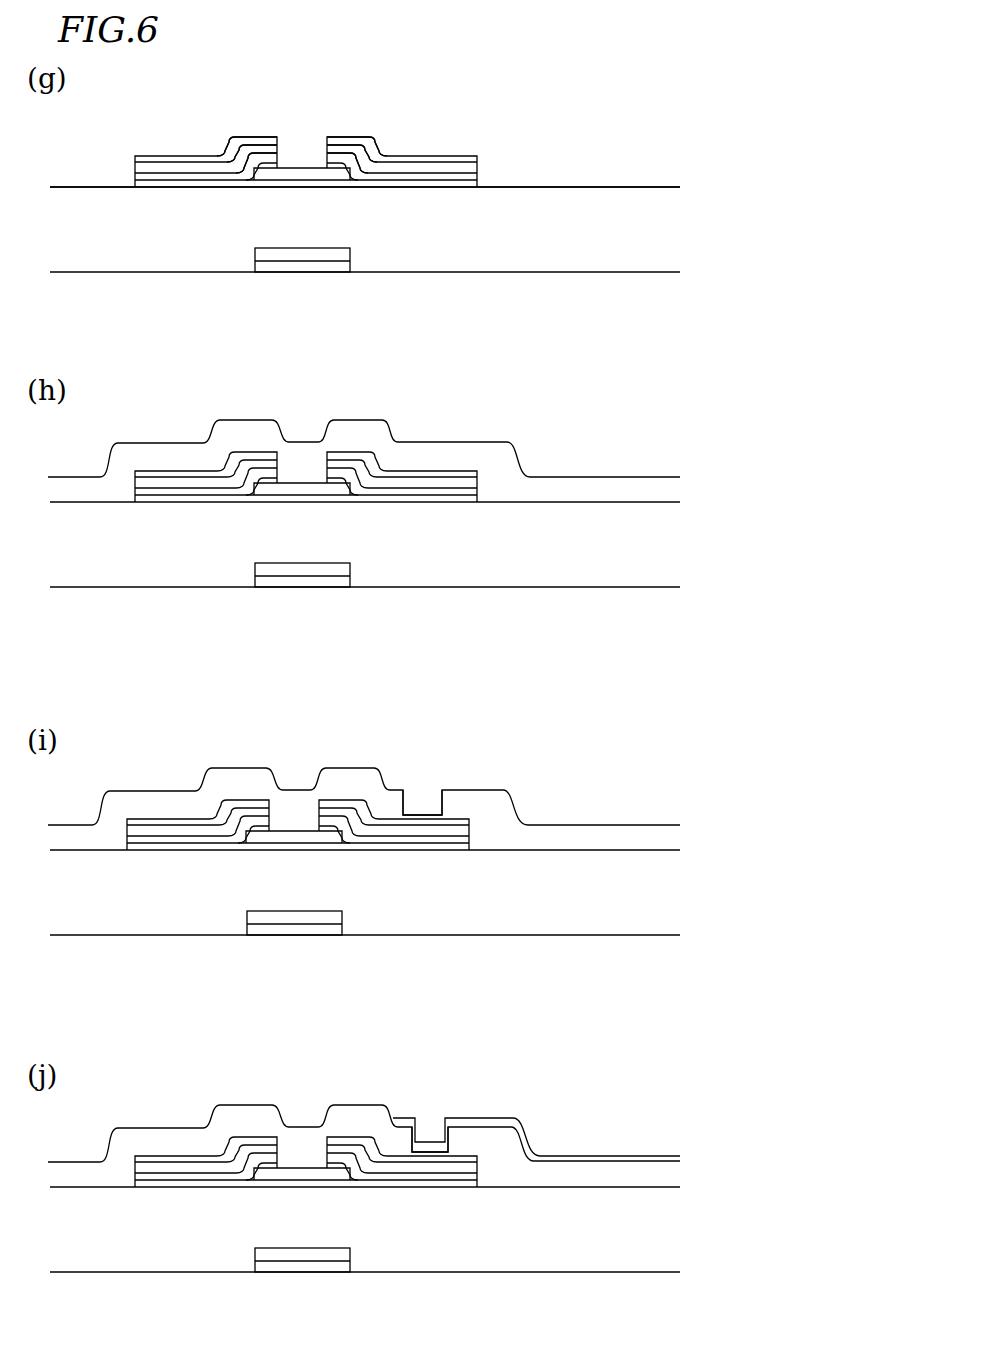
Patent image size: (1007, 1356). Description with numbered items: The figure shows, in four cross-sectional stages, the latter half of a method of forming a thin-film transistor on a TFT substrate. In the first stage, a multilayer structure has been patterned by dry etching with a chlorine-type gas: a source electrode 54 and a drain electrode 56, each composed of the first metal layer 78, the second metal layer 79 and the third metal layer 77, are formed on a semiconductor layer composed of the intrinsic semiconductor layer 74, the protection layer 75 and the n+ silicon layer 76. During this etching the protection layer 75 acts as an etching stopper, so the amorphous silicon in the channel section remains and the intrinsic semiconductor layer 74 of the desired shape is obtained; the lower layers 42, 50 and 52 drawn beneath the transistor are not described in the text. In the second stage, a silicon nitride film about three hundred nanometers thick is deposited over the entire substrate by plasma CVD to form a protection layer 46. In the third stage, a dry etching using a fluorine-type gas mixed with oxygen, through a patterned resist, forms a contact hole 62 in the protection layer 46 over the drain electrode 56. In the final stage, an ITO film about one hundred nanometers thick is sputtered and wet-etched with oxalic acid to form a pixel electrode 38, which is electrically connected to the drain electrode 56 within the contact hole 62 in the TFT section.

The pixel electrode 38 is at (518, 1119).
The insulating layer 42 is at (640, 230).
The protection layer 46 is at (660, 493).
The substrate 50 is at (668, 298).
The gate electrode 52 is at (357, 250).
The source electrode 54 is at (117, 72).
The drain electrode 56 is at (478, 70).
The contact hole 62 is at (432, 800).
The intrinsic semiconductor layer 74 is at (477, 187).
The protection layer 75 is at (265, 176).
The n+ silicon layer 76 is at (477, 182).
The third metal layer 77 is at (228, 175).
The first metal layer 78 is at (233, 157).
The second metal layer 79 is at (228, 146).